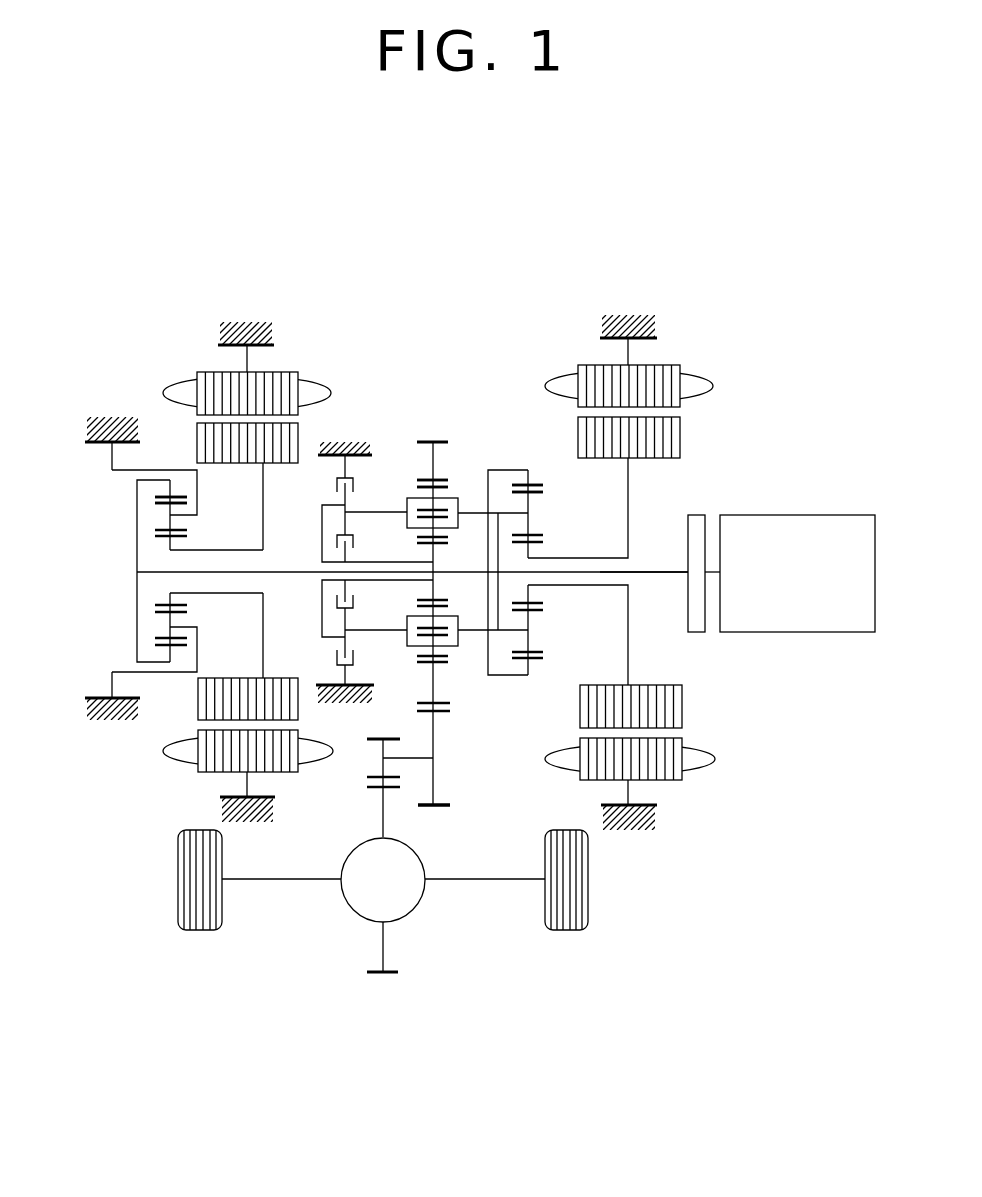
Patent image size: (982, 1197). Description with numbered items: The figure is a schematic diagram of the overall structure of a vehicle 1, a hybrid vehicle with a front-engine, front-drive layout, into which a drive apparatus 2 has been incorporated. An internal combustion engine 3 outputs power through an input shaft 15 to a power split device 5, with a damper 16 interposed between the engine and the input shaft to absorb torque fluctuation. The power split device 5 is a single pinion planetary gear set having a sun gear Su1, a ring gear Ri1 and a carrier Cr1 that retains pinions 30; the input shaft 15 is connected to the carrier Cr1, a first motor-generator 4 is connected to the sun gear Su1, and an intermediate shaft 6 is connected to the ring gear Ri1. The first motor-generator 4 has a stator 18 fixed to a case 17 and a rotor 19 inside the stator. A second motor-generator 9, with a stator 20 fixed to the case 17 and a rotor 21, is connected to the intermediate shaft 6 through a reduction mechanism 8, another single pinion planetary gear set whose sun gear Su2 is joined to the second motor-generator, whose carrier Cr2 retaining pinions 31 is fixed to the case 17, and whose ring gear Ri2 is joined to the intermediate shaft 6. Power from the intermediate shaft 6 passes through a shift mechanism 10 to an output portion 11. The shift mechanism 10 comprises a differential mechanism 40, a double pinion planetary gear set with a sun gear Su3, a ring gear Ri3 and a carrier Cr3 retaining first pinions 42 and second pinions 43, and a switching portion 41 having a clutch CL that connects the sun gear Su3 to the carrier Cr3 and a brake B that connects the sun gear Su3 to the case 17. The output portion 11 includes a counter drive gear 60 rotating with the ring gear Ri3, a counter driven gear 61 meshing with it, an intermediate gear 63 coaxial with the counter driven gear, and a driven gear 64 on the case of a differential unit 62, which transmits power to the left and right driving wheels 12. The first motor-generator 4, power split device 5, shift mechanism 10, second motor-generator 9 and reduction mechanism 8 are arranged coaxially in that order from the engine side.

The vehicle 1 is at (420, 172).
The drive apparatus 2 is at (468, 629).
The internal combustion engine 3 is at (813, 515).
The first motor-generator 4 is at (667, 373).
The power split device 5 is at (558, 489).
The intermediate shaft 6 is at (283, 568).
The reduction mechanism 8 is at (162, 485).
The second motor-generator 9 is at (240, 516).
The shift mechanism 10 is at (446, 549).
The output portion 11 is at (486, 753).
The driving wheels 12 is at (202, 932).
The input shaft 15 is at (655, 572).
The damper 16 is at (697, 515).
The case 17 is at (240, 322).
The stator 18 is at (672, 388).
The rotor 19 is at (677, 425).
The stator 20 is at (220, 378).
The rotor 21 is at (213, 435).
The pinions 30 is at (530, 492).
The pinions 31 is at (170, 513).
The differential mechanism 40 is at (461, 459).
The switching portion 41 is at (354, 462).
The first pinions 42 is at (425, 540).
The second pinions 43 is at (436, 490).
The counter drive gear 60 is at (452, 705).
The counter driven gear 61 is at (450, 808).
The differential unit 62 is at (344, 944).
The intermediate gear 63 is at (372, 737).
The driven gear 64 is at (373, 788).
The brake B is at (337, 485).
The clutch CL is at (337, 541).
The carrier Cr1 is at (500, 598).
The carrier Cr2 is at (137, 480).
The carrier Cr3 is at (374, 513).
The ring gear Ri1 is at (535, 482).
The ring gear Ri2 is at (178, 500).
The ring gear Ri3 is at (421, 482).
The sun gear Su1 is at (535, 540).
The sun gear Su2 is at (182, 536).
The sun gear Su3 is at (440, 546).